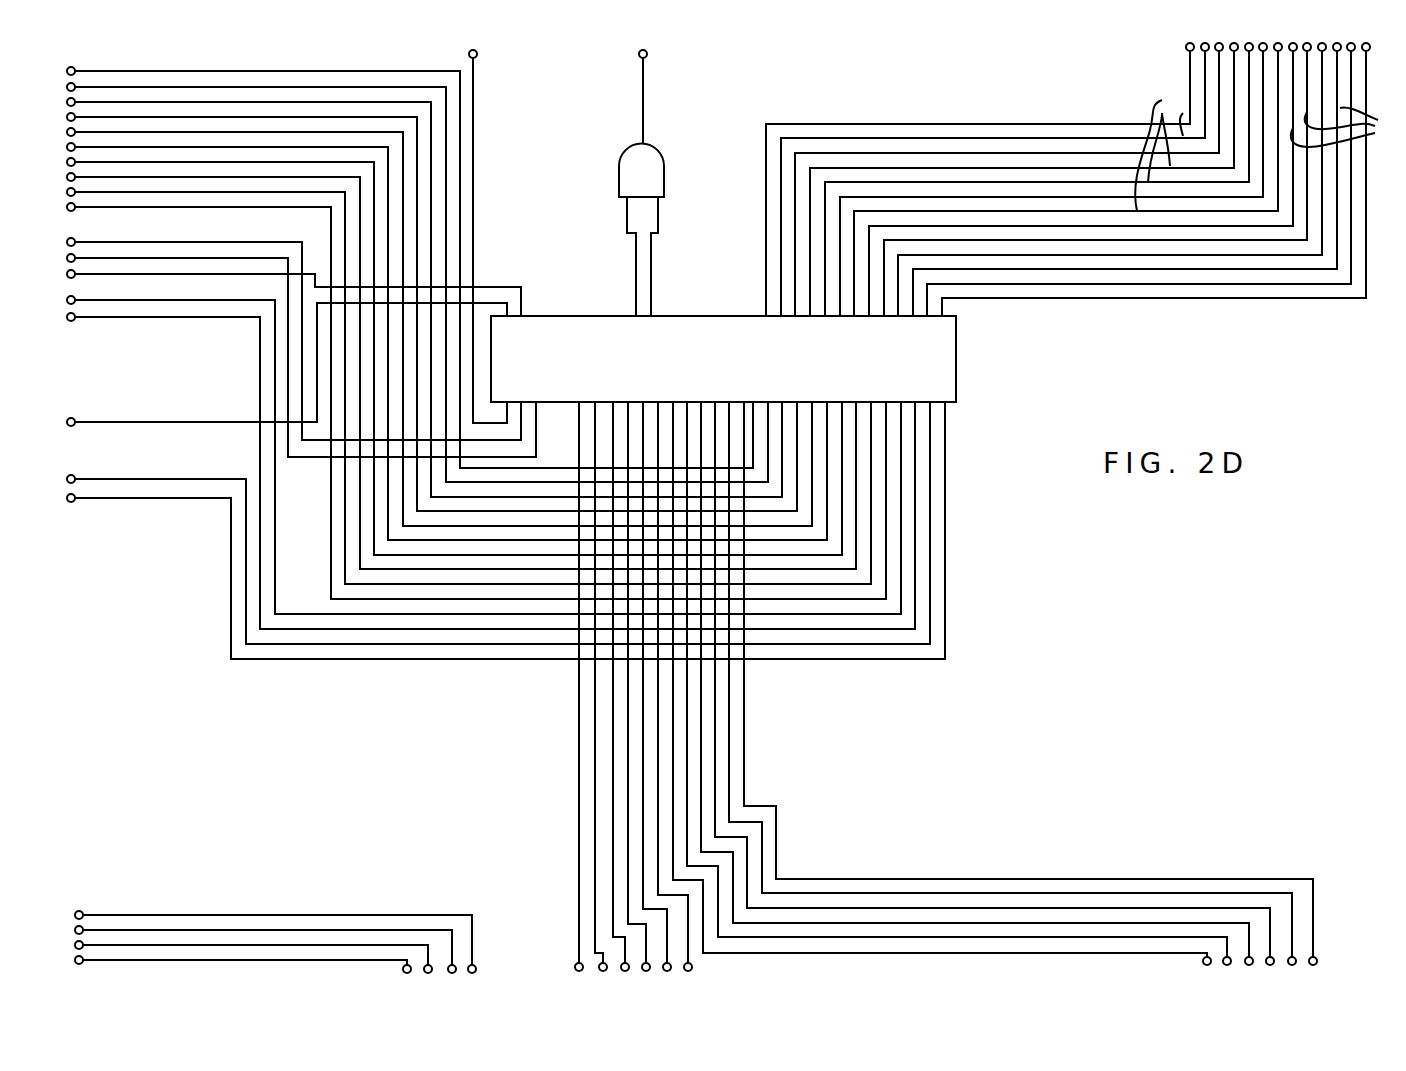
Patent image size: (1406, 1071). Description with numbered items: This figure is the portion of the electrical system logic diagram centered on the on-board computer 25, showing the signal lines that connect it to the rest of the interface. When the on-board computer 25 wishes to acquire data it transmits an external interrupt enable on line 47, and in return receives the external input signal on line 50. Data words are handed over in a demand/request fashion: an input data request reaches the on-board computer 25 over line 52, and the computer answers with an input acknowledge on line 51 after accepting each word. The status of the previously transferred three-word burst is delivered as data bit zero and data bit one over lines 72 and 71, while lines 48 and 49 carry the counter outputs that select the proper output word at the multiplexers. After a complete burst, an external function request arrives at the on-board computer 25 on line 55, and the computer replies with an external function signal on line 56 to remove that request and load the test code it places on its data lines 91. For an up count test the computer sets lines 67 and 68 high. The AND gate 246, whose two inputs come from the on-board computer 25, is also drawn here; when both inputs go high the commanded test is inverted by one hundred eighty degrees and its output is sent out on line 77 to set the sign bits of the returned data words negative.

The on-board computer 25 is at (706, 322).
The AND gate 246 is at (657, 160).
The line 77 is at (645, 57).
The line 55 is at (476, 57).
The line 50 is at (79, 241).
The line 51 is at (79, 277).
The line 52 is at (79, 257).
The line 47 is at (76, 422).
The line 56 is at (1208, 51).
The line 67 is at (1368, 50).
The line 68 is at (1370, 58).
The data lines 91 is at (1192, 103).
The line 72 is at (82, 912).
The line 71 is at (82, 929).
The line 48 is at (82, 944).
The line 49 is at (83, 963).